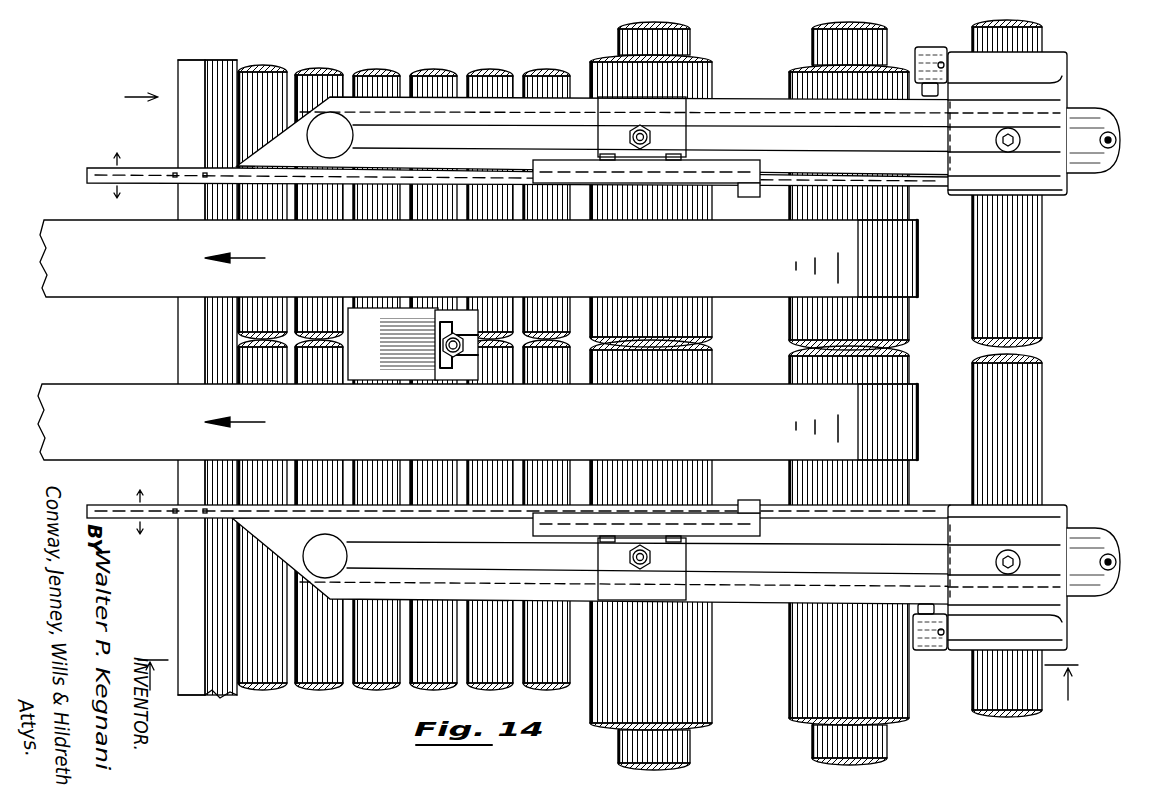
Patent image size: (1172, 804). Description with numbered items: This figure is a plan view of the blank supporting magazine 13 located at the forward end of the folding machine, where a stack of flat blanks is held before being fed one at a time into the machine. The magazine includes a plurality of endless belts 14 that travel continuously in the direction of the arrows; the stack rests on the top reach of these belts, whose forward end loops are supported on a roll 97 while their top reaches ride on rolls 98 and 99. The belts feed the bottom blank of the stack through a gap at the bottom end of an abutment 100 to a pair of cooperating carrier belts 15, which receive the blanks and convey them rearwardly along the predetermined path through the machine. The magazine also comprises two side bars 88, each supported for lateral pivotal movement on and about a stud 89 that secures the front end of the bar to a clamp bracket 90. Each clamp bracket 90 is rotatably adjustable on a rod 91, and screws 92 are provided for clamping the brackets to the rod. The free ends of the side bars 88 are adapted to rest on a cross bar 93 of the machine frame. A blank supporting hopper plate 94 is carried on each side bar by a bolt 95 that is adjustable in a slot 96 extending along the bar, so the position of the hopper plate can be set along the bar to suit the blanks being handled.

The magazine 13 is at (120, 98).
The endless belts 14 is at (725, 405).
The carrier belts 15 is at (608, 695).
The side bars 88 is at (105, 172).
The stud 89 is at (995, 140).
The clamp bracket 90 is at (1052, 193).
The rod 91 is at (985, 688).
The screws 92 is at (1117, 140).
The cross bar 93 is at (182, 690).
The hopper plate 94 is at (727, 180).
The bolt 95 is at (655, 138).
The slot 96 is at (385, 135).
The roll 97 is at (812, 82).
The roll 98 is at (712, 52).
The rolls 99 is at (372, 80).
The abutment 100 is at (413, 344).